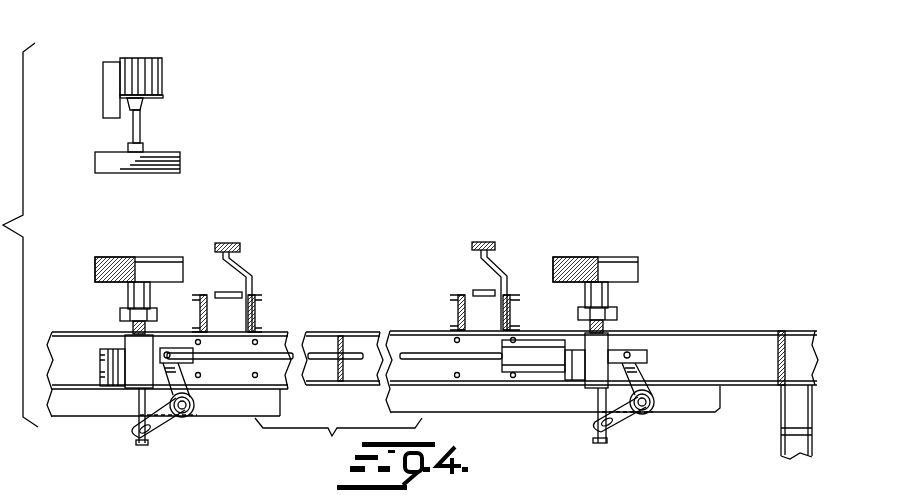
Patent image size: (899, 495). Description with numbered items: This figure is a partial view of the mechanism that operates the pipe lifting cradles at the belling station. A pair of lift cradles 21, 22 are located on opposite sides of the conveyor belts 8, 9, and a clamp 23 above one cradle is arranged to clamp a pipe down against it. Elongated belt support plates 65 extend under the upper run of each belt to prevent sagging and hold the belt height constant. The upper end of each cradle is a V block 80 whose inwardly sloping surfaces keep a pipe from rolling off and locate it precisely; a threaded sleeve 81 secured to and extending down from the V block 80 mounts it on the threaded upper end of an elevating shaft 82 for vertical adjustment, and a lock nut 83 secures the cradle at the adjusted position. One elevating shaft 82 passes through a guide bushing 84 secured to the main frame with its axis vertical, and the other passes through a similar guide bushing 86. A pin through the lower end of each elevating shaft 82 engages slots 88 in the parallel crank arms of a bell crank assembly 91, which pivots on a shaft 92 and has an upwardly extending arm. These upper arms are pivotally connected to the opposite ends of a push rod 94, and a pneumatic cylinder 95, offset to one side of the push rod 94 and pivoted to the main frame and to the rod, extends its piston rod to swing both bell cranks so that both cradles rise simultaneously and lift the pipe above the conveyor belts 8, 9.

The conveyor belt 8 is at (221, 243).
The conveyor belt 9 is at (477, 242).
The lift cradle 21 is at (609, 255).
The lift cradle 22 is at (156, 257).
The clamp 23 is at (173, 155).
The belt support plate 65 is at (478, 256).
The V block 80 is at (103, 267).
The threaded sleeve 81 is at (598, 290).
The elevating shaft 82 is at (132, 403).
The lock nut 83 is at (615, 314).
The guide bushing 84 is at (613, 340).
The guide bushing 86 is at (135, 352).
The slots 88 is at (133, 435).
The bell crank assembly 91 is at (193, 407).
The shaft 92 is at (178, 415).
The push rod 94 is at (357, 357).
The pneumatic cylinder 95 is at (536, 347).